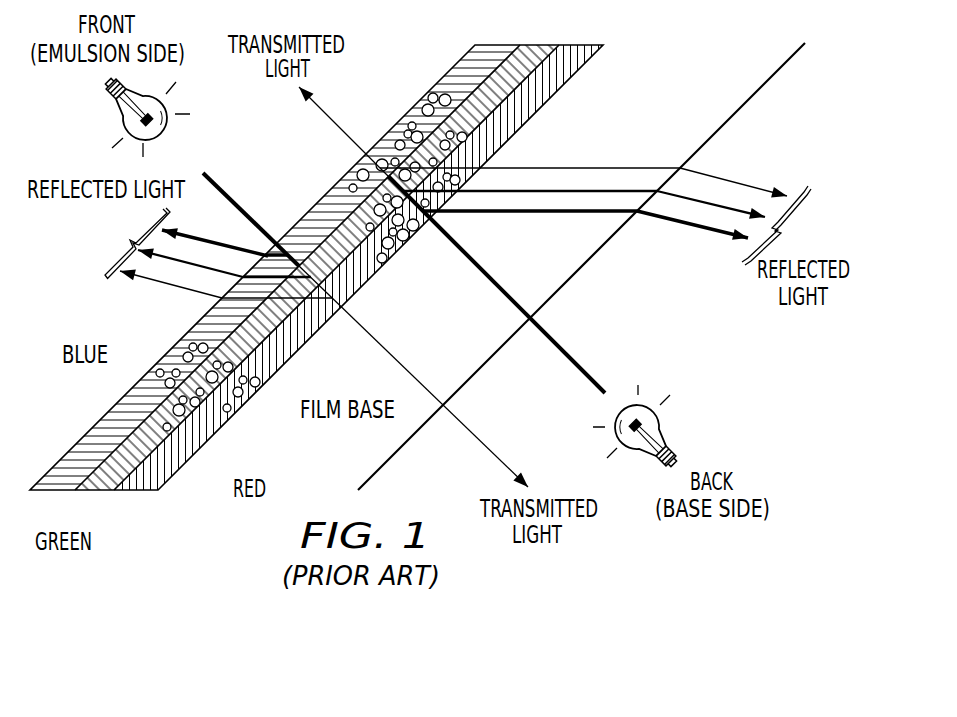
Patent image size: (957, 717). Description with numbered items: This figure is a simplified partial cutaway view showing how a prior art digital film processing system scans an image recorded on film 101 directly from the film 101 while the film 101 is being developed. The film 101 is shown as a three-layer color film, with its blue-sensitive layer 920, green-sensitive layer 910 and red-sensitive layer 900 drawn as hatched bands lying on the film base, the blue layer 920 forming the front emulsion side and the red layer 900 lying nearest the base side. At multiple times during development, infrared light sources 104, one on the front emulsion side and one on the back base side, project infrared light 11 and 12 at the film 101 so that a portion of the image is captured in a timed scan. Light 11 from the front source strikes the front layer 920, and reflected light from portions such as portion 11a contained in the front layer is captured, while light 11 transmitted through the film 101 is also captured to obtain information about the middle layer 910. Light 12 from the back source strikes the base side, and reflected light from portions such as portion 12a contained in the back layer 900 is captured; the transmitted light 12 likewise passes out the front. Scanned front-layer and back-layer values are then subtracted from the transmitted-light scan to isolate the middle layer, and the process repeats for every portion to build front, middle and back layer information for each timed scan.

The film 101 is at (417, 273).
The blue-sensitive emulsion layer 920 is at (117, 428).
The green-sensitive emulsion layer 910 is at (100, 484).
The red-sensitive emulsion layer 900 is at (178, 456).
The infrared light source 104 is at (122, 121).
The infrared light 11 is at (184, 151).
The portion 11a is at (211, 253).
The infrared light 12 is at (588, 384).
The portion 12a is at (601, 216).